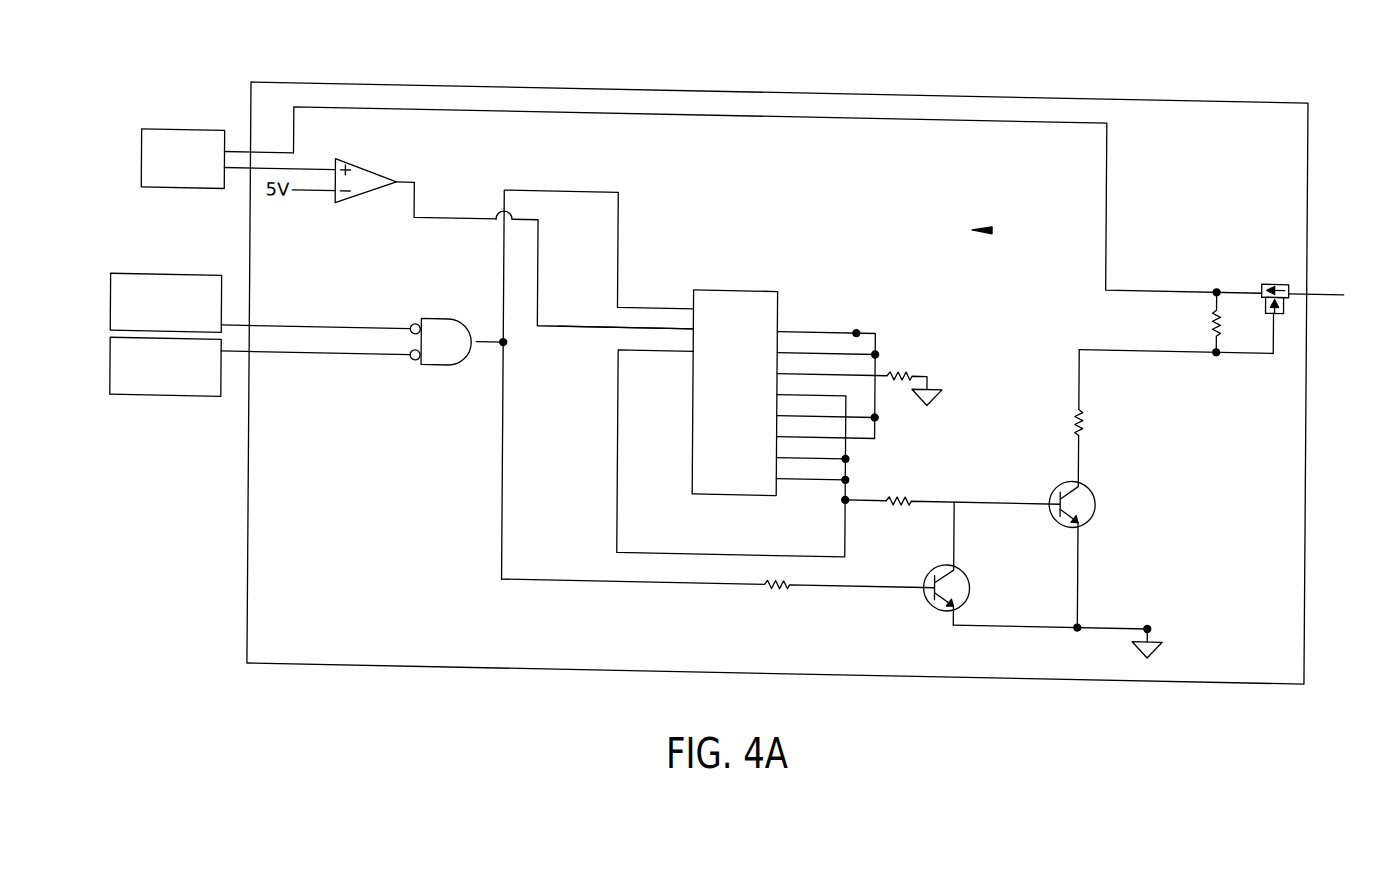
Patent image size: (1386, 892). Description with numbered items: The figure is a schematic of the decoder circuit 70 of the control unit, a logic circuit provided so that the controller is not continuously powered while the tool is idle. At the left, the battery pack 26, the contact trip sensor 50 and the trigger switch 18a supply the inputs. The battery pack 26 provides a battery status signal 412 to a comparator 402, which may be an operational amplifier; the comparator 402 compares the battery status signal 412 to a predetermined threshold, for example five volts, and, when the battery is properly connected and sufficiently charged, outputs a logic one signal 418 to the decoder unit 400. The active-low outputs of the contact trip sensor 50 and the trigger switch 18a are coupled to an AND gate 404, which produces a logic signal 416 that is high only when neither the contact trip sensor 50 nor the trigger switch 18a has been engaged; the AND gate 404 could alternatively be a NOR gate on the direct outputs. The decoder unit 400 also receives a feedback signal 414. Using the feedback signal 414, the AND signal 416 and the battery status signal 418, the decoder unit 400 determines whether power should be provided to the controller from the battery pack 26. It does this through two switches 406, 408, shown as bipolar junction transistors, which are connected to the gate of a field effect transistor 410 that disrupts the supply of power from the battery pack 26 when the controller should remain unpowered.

The battery pack 26 is at (206, 126).
The contact trip sensor 50 is at (198, 273).
The trigger switch 18a is at (197, 398).
The decoder circuit 70 is at (373, 663).
The battery status signal 412 is at (310, 167).
The comparator 402 is at (367, 167).
The AND gate 404 is at (439, 368).
The AND signal 416 is at (620, 204).
The battery status logic signal 418 is at (574, 322).
The feedback signal 414 is at (620, 451).
The decoder unit 400 is at (739, 485).
The switch 406 is at (973, 573).
The switch 408 is at (1098, 488).
The field effect transistor 410 is at (1284, 262).